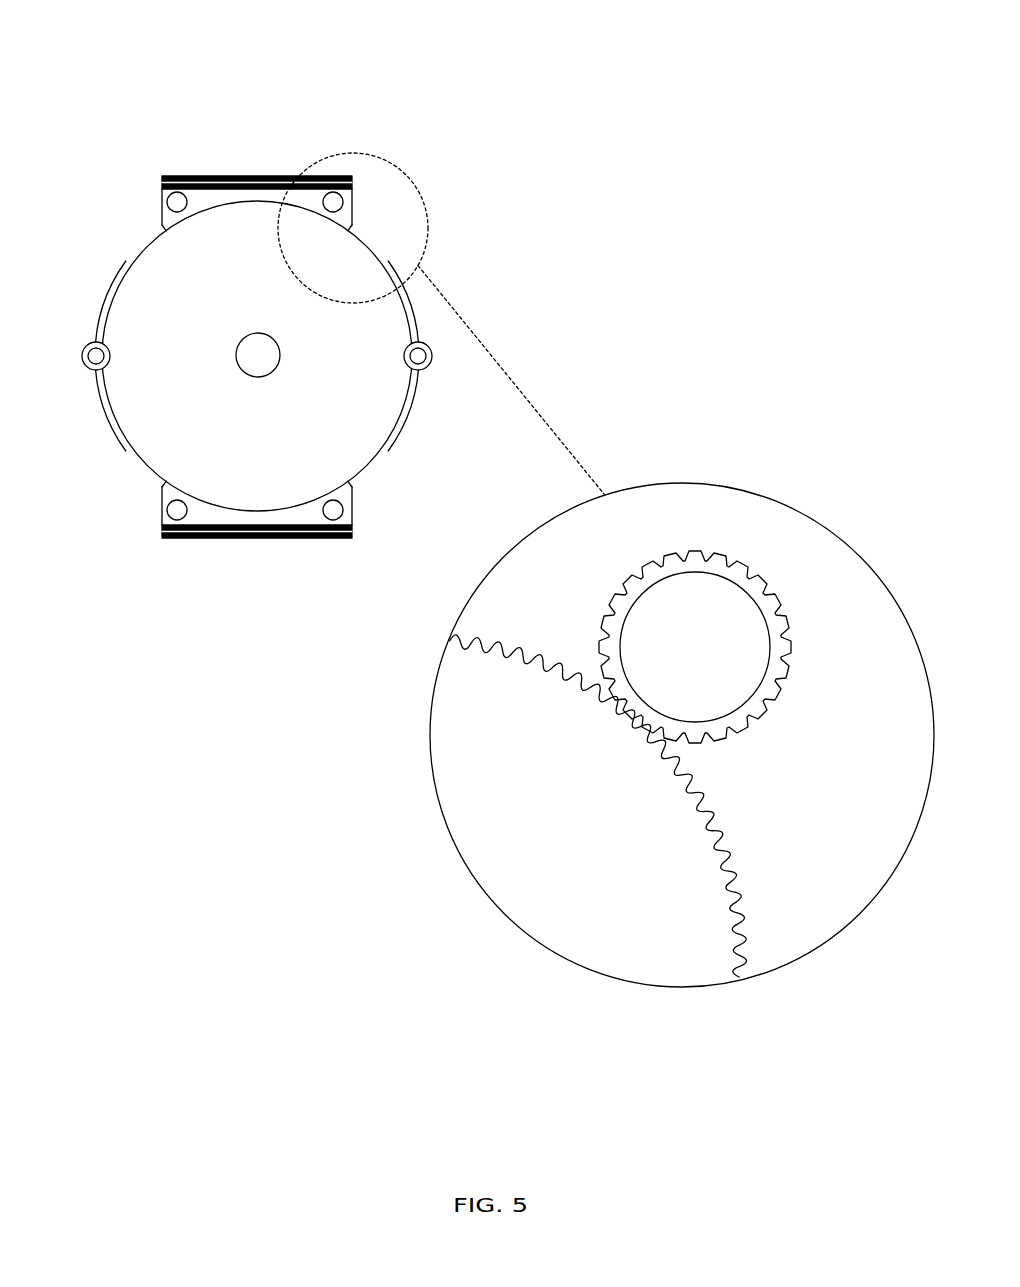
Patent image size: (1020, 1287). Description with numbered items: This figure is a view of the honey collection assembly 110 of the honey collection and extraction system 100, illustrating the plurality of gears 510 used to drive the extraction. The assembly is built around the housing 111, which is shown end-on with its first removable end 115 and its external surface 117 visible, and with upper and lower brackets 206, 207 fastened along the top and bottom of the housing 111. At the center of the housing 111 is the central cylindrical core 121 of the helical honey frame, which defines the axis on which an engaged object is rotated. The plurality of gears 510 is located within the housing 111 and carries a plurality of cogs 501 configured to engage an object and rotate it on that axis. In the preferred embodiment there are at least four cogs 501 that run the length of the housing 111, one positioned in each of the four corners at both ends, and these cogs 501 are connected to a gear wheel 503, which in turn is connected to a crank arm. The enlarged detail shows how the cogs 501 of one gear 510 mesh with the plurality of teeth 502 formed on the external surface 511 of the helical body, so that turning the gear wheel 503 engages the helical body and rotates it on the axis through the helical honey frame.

The honey collection and extraction system 100 is at (763, 83).
The honey collection assembly 110 is at (778, 120).
The housing 111 is at (220, 162).
The first removable end 115 is at (143, 290).
The external surface 117 is at (135, 478).
The central cylindrical core 121 is at (223, 358).
The upper mounting bracket 206 is at (163, 180).
The lower mounting bracket 207 is at (162, 535).
The cogs 501 is at (778, 608).
The teeth 502 is at (750, 963).
The gear wheel 503 is at (626, 950).
The gears 510 is at (707, 602).
The external surface 511 is at (740, 900).